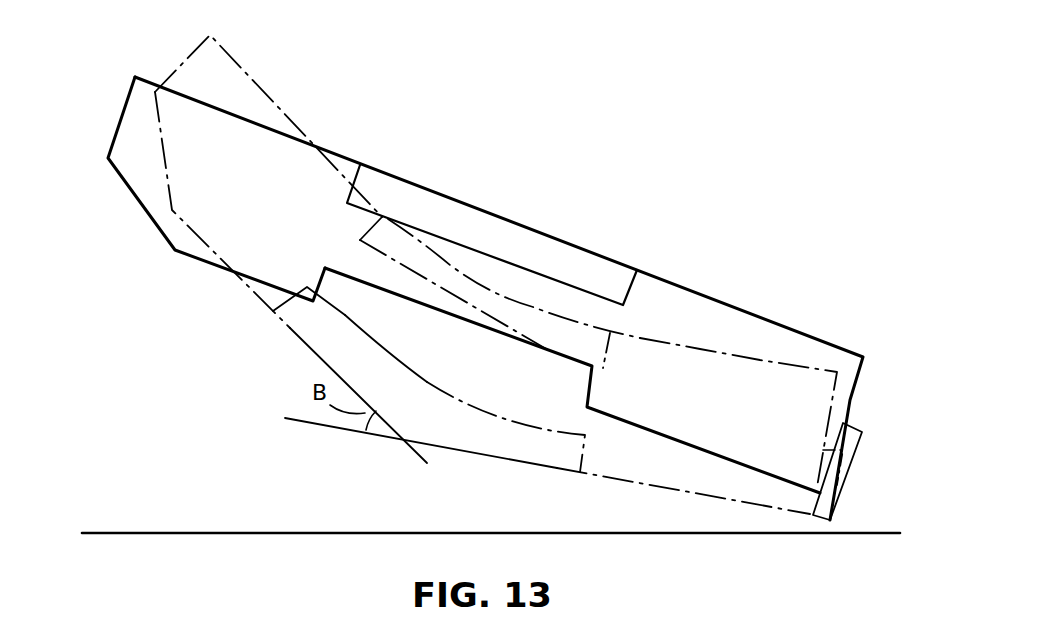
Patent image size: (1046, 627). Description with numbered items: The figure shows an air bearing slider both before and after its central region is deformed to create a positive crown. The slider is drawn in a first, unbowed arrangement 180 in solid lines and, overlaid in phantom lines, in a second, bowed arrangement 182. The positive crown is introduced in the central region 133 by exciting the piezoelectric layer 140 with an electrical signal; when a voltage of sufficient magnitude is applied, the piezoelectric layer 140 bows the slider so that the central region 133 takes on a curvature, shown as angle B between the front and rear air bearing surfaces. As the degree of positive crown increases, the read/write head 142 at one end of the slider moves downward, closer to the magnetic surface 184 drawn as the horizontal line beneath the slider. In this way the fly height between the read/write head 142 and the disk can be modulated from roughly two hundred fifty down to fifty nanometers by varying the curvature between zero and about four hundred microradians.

The second, bowed arrangement 182 is at (230, 81).
The first, unbowed arrangement 180 is at (665, 298).
The piezoelectric layer 140 is at (470, 232).
The central region 133 is at (582, 305).
The read/write head 142 is at (853, 441).
The magnetic surface 184 is at (212, 533).